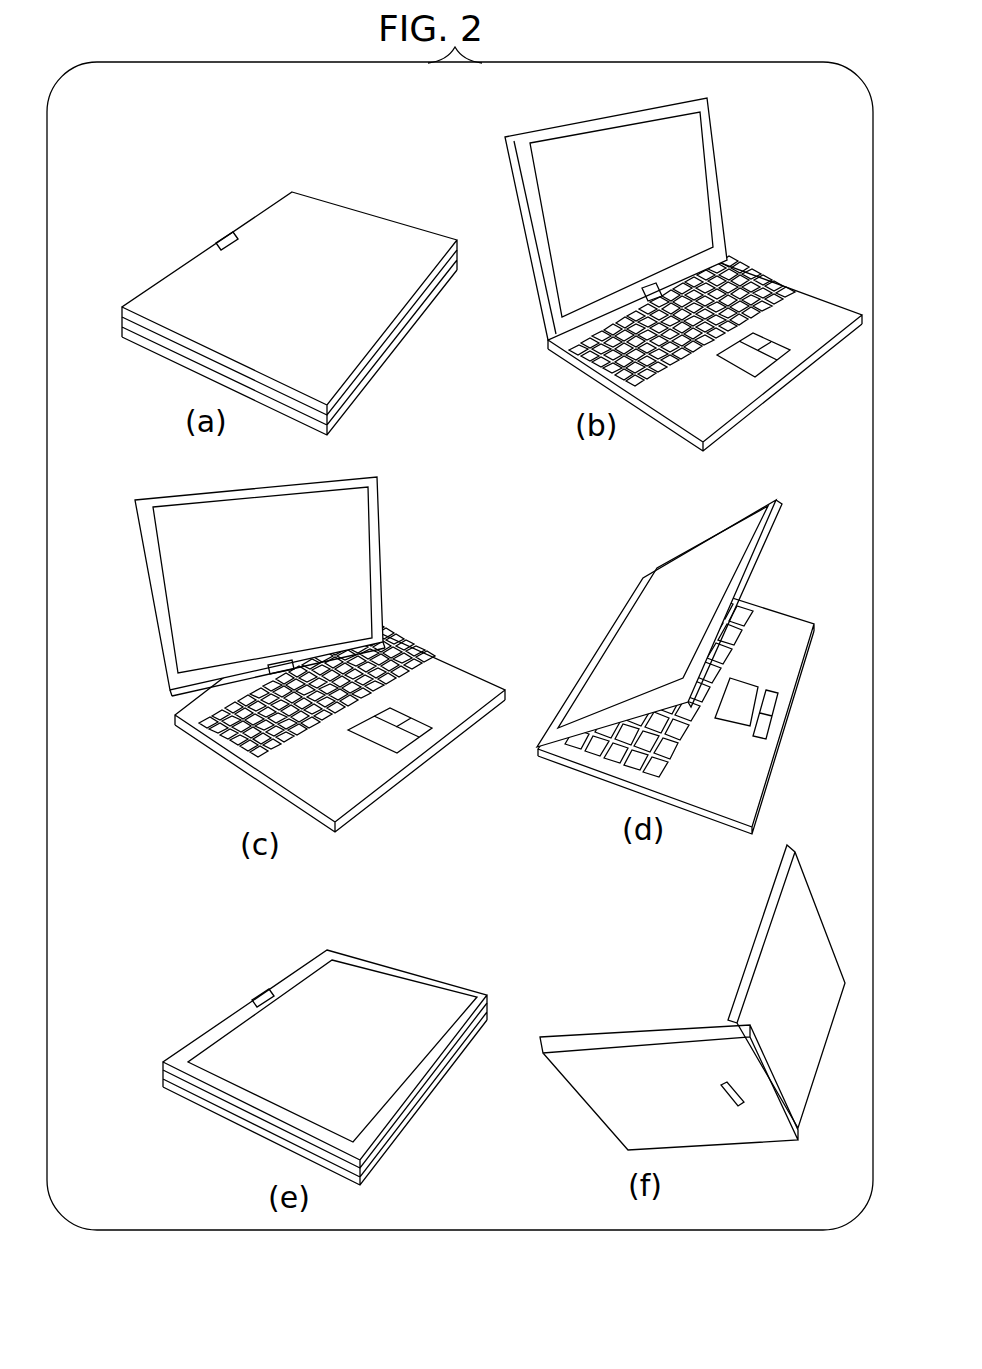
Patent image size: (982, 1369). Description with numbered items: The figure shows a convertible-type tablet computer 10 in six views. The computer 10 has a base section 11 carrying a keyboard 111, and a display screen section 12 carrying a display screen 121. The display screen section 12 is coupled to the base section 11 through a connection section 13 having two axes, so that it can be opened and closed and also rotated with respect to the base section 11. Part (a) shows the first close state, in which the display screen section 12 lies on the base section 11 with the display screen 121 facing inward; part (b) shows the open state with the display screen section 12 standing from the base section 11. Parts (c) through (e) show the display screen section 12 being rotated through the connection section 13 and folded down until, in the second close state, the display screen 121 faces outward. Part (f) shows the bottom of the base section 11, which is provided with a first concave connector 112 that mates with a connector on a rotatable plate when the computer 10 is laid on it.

The computer 10 is at (127, 183).
The base section 11 is at (108, 316).
The display screen section 12 is at (117, 298).
The connection section 13 is at (212, 232).
The keyboard 111 is at (754, 272).
The first concave connector 112 is at (736, 1116).
The display screen 121 is at (690, 143).